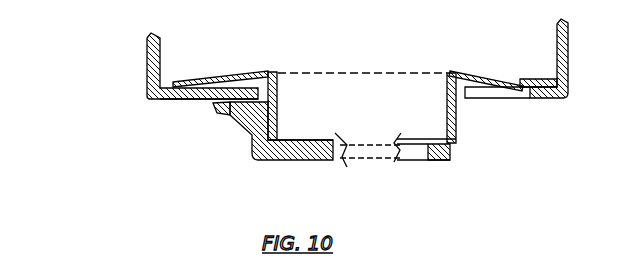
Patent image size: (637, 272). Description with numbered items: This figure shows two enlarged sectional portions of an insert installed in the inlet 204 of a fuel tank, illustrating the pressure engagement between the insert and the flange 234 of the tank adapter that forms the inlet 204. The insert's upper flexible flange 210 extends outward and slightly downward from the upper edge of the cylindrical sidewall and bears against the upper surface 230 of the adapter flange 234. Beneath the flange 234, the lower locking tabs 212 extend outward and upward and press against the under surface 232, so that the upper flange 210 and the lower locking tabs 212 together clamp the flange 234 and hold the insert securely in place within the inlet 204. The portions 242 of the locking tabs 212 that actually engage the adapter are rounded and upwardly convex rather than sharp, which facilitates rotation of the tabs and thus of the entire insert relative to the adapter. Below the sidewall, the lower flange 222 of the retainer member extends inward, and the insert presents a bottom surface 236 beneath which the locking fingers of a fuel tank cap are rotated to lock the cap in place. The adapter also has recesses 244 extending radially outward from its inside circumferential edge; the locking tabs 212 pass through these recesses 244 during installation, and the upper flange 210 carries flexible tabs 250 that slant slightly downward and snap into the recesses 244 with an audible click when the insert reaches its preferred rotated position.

The inlet 204 is at (277, 88).
The upper flexible flange 210 is at (243, 75).
The lower locking tabs 212 is at (243, 123).
The lower flange 222 is at (300, 138).
The upper surface 230 is at (217, 77).
The under surface 232 is at (183, 98).
The flange 234 is at (202, 99).
The bottom surface 236 is at (310, 160).
The portions of locking tabs 242 is at (227, 117).
The recesses 244 is at (521, 97).
The flexible tabs 250 is at (511, 86).